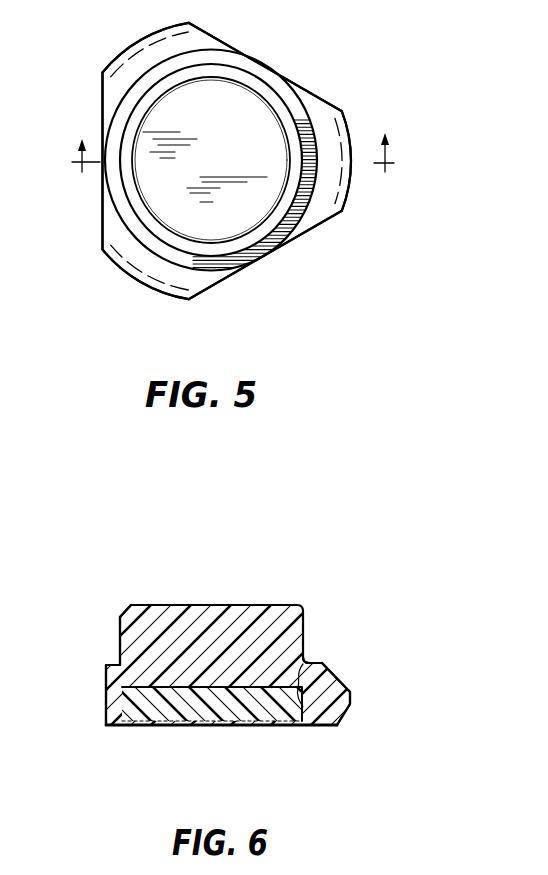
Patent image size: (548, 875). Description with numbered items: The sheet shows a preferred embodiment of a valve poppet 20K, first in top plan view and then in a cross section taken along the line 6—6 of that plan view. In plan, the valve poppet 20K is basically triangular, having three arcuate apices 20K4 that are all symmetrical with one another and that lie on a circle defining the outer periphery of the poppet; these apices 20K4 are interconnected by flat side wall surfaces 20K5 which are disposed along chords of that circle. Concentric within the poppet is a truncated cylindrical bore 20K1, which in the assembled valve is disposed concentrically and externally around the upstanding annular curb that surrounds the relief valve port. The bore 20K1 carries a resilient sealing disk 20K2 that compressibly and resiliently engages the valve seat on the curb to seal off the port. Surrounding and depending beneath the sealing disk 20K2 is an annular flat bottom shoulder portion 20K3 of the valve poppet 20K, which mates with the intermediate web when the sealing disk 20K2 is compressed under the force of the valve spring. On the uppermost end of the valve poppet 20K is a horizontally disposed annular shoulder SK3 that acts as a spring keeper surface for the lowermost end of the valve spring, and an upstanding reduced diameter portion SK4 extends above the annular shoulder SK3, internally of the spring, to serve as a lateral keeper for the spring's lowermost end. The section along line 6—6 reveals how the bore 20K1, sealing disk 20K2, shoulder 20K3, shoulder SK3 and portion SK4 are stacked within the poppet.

In FIG. 5, the valve poppet 20K is at (262, 152).
In FIG. 6, the valve poppet 20K is at (220, 578).
In FIG. 6, the truncated cylindrical bore 20K1 is at (312, 665).
In FIG. 6, the resilient sealing disk 20K2 is at (200, 727).
In FIG. 5, the annular flat bottom shoulder portion 20K3 is at (108, 176).
In FIG. 6, the annular flat bottom shoulder portion 20K3 is at (117, 728).
In FIG. 5, the arcuate apices 20K4 is at (155, 32).
In FIG. 6, the arcuate apices 20K4 is at (352, 698).
In FIG. 5, the flat side wall surfaces 20K5 is at (100, 95).
In FIG. 6, the flat side wall surfaces 20K5 is at (106, 707).
In FIG. 5, the annular shoulder SK3 is at (275, 87).
In FIG. 6, the annular shoulder SK3 is at (118, 660).
In FIG. 5, the upstanding reduced diameter portion SK4 is at (258, 74).
In FIG. 6, the upstanding reduced diameter portion SK4 is at (120, 616).
In FIG. 5, the section line 6 is at (233, 146).